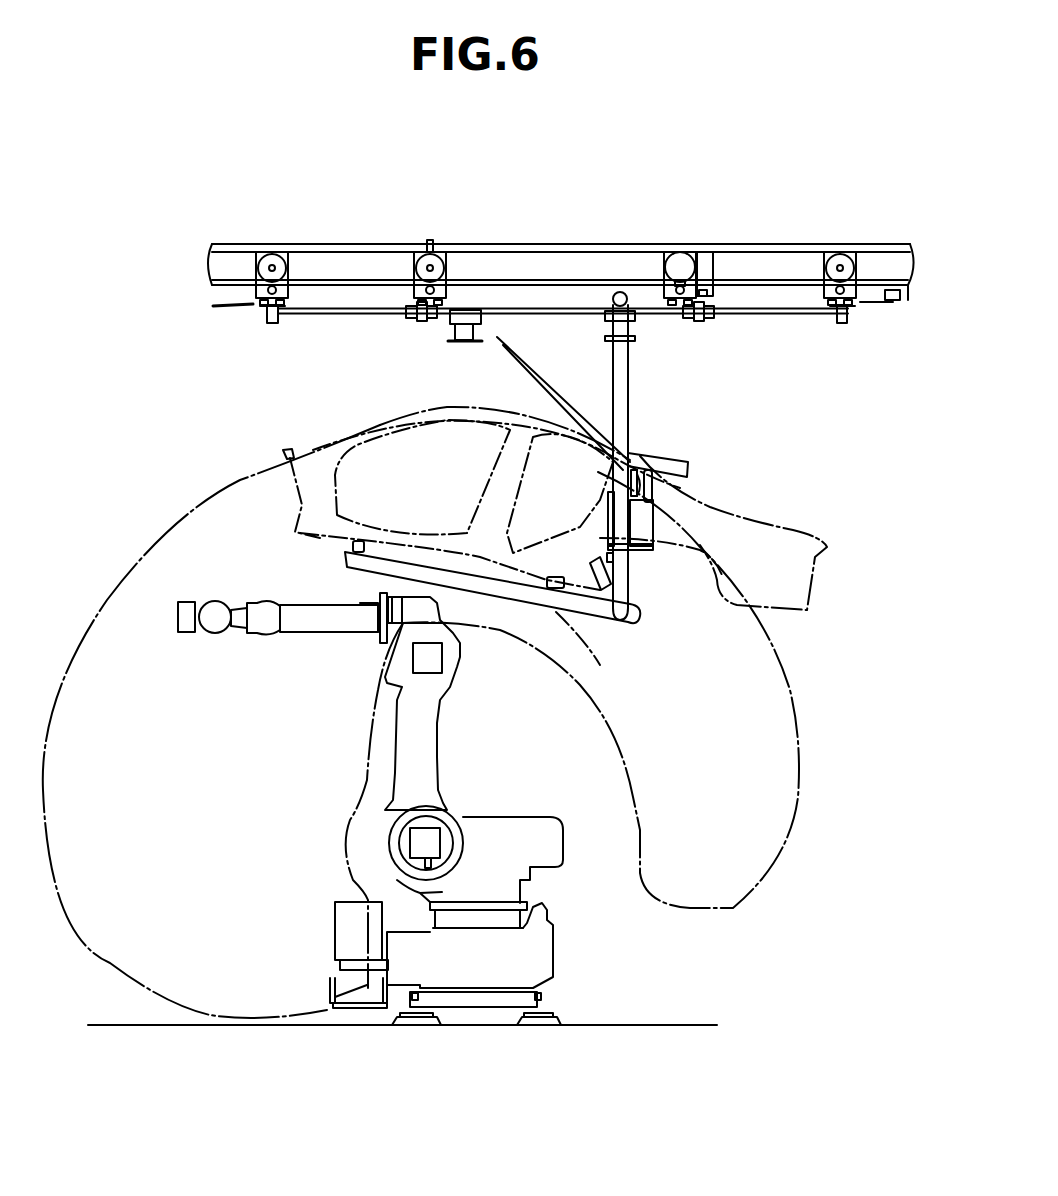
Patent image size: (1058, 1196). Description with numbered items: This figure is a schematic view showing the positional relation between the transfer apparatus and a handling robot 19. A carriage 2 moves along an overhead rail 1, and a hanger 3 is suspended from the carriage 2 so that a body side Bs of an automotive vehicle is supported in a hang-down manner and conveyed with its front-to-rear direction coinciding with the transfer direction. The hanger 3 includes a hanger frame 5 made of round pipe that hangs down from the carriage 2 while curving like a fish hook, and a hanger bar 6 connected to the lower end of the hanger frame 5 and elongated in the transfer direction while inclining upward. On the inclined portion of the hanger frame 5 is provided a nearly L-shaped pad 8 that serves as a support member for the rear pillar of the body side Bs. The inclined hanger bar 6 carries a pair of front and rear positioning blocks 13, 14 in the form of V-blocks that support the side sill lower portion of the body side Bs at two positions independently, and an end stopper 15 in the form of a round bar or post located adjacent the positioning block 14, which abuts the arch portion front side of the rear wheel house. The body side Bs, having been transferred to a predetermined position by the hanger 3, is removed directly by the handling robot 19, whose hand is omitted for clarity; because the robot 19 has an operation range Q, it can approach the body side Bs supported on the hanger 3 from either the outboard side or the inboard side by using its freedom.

The rail 1 is at (740, 240).
The carriage 2 is at (518, 300).
The hanger 3 is at (636, 376).
The hanger frame 5 is at (630, 413).
The hanger bar 6 is at (568, 622).
The pad 8 is at (688, 462).
The positioning block 13 is at (356, 541).
The positioning block 14 is at (552, 577).
The end stopper 15 is at (607, 557).
The handling robot 19 is at (385, 727).
The operation range Q is at (172, 520).
The body side Bs is at (769, 516).